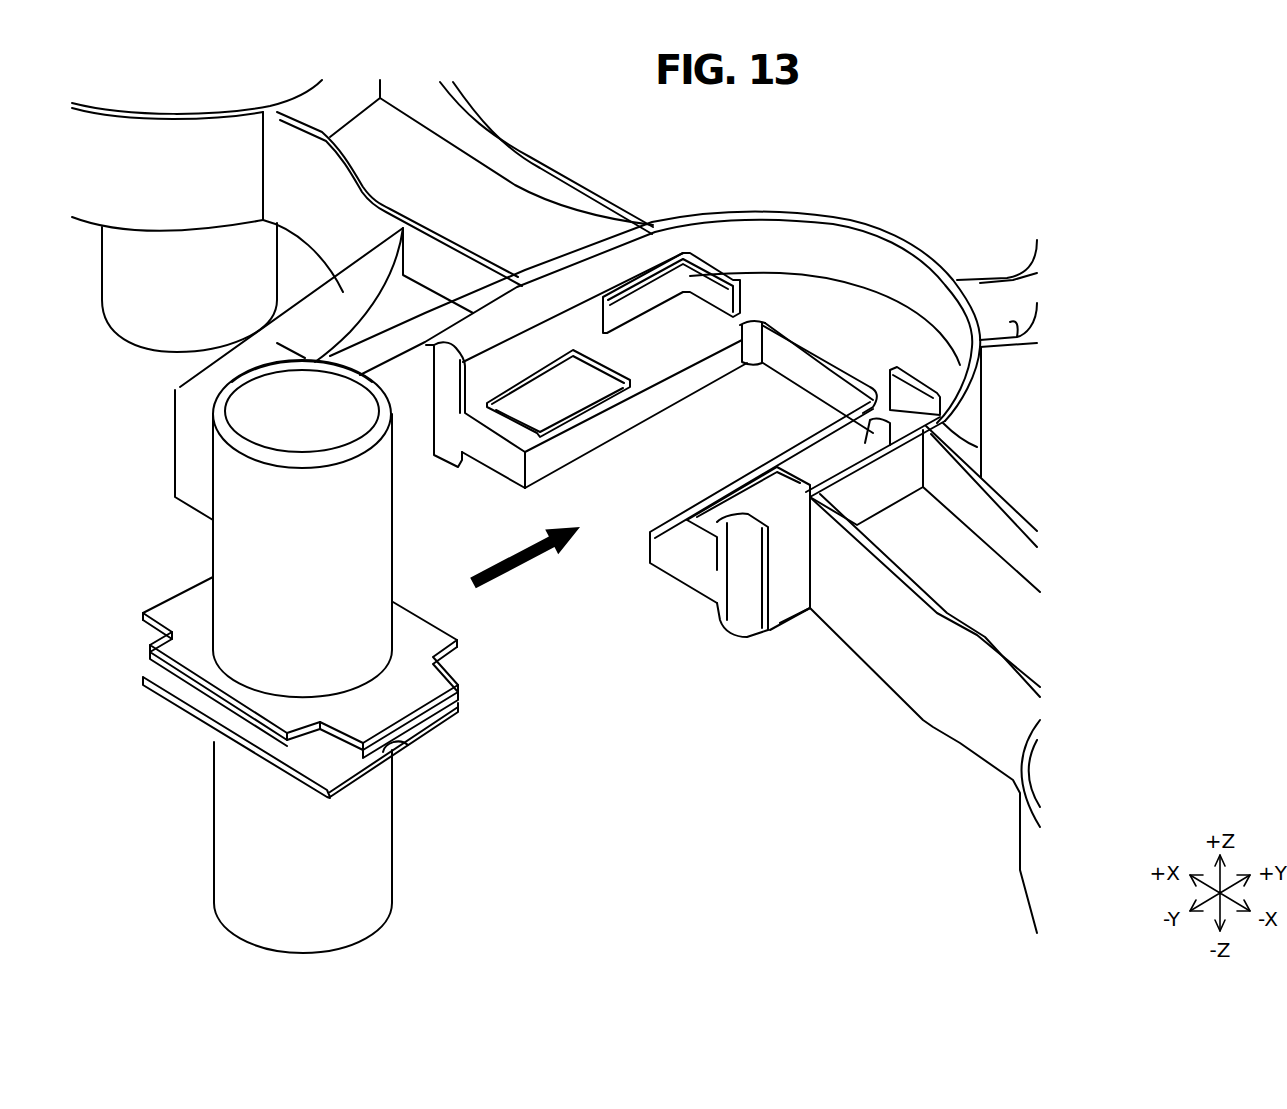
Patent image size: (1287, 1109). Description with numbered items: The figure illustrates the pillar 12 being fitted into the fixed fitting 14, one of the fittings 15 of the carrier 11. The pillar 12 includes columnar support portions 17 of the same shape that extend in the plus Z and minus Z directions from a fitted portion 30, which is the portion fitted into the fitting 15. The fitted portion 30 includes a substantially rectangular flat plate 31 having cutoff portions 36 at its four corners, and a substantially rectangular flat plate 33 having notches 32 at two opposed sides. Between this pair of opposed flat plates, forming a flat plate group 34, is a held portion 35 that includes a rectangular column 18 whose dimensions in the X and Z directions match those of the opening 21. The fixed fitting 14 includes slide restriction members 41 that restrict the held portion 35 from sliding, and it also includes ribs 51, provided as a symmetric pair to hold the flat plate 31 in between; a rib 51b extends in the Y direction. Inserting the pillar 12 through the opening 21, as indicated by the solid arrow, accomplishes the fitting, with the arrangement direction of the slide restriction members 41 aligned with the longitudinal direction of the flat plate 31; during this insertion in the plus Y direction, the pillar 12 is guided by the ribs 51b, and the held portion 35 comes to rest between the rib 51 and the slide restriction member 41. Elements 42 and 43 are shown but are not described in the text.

The carrier 11 is at (562, 170).
The pillar 12 is at (297, 656).
The fixed fitting 14 is at (724, 406).
The fitting 15 is at (724, 406).
The support portion 17 is at (232, 542).
The rectangular column 18 is at (303, 750).
The opening 21 is at (605, 572).
The fitted portion 30 is at (297, 738).
The flat plate 31 is at (397, 693).
The notch 32 is at (408, 784).
The flat plate 33 is at (410, 742).
The flat plate group 34 is at (347, 754).
The held portion 35 is at (474, 699).
The cutoff portion 36 is at (468, 661).
The slide restriction member 41 is at (680, 406).
The recess 42 is at (558, 385).
The accommodating recess 43 is at (807, 380).
The rib 51 is at (712, 245).
The rib 51b is at (633, 302).